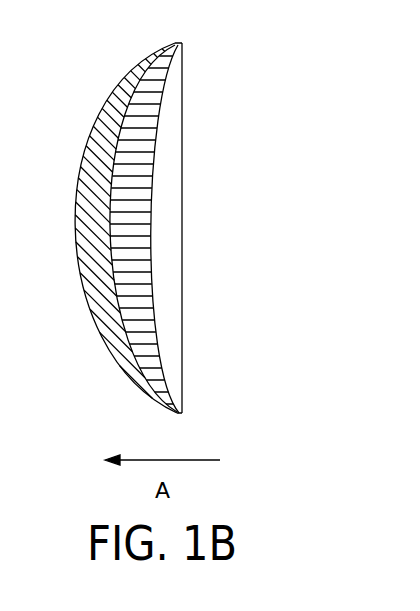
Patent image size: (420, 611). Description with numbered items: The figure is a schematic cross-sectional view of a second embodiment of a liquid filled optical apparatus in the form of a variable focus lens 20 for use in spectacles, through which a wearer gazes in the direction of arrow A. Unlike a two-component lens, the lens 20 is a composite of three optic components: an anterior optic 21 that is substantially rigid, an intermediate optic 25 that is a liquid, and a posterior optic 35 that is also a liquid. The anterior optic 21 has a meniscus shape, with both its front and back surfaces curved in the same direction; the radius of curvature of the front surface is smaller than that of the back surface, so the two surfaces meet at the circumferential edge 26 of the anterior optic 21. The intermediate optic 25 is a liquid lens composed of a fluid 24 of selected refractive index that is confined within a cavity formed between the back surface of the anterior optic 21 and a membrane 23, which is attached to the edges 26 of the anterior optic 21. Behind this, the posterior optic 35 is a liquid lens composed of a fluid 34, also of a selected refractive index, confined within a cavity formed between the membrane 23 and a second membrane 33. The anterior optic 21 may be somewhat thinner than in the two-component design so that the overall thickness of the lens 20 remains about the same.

The variable focus lens 20 is at (138, 229).
The anterior optic 21 is at (111, 160).
The membrane 23 is at (160, 115).
The fluid 24 is at (157, 78).
The intermediate optic 25 is at (148, 150).
The circumferential edge 26 is at (177, 43).
The membrane 33 is at (182, 342).
The fluid 34 is at (158, 218).
The posterior optic 35 is at (160, 265).